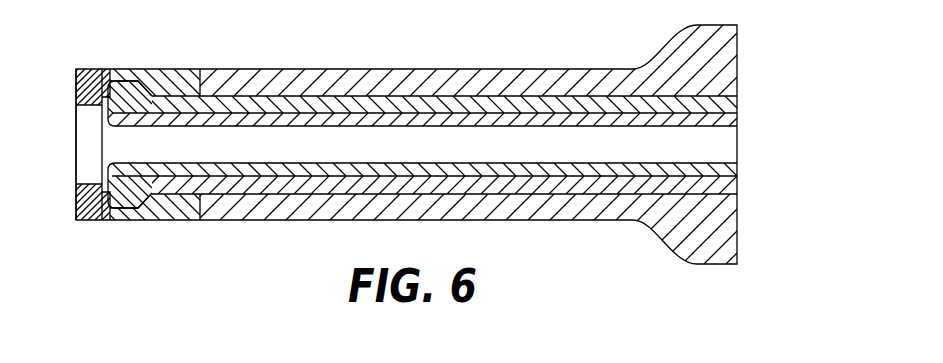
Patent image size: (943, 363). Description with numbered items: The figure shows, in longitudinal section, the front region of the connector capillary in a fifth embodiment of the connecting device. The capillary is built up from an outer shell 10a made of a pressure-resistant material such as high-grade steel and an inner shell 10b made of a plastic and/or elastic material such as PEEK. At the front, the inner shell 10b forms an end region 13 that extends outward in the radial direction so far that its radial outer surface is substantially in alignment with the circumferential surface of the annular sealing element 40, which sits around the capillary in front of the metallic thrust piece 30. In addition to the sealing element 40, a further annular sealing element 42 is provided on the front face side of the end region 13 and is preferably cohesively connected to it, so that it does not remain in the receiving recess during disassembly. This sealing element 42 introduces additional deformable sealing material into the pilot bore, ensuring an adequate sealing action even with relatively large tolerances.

The thrust piece 30 is at (403, 76).
The sealing element 40 is at (141, 68).
The further annular sealing element 42 is at (86, 88).
The end region 13 is at (109, 188).
The outer shell 10a is at (738, 108).
The inner shell 10b is at (735, 165).